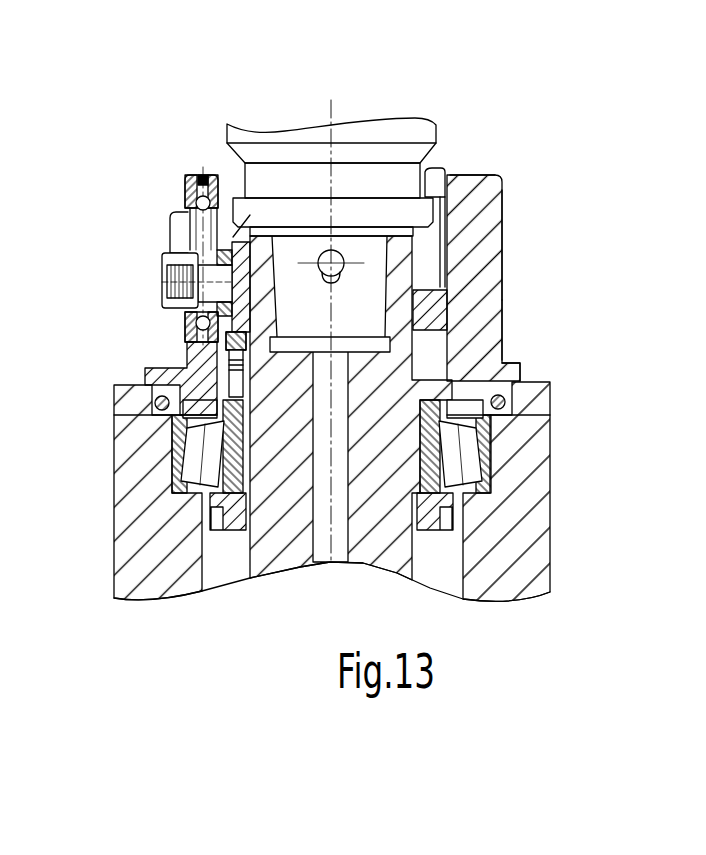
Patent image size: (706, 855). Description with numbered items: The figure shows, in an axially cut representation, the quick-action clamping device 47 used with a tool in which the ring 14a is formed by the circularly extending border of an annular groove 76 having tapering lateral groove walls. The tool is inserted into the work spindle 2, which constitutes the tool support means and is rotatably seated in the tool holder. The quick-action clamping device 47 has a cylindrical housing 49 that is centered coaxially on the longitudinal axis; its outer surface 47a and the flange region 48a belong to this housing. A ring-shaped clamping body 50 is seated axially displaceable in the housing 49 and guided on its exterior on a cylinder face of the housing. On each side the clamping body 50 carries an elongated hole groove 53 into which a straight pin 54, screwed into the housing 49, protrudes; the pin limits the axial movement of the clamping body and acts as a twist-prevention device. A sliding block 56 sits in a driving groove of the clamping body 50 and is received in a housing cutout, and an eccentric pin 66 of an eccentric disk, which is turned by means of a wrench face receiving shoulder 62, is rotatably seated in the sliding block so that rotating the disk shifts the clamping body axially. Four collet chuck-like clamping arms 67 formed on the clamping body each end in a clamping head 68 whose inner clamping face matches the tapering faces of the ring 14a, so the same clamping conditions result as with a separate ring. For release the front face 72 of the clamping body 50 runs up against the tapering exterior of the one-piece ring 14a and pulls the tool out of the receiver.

The spindle 2 is at (265, 540).
The ring 14a is at (476, 175).
The quick-action clamping device 47 is at (0, 117).
The clamping ring outer surface 47a is at (506, 277).
The cover flange 48a is at (192, 353).
The housing 49 is at (467, 340).
The clamping body 50 is at (425, 317).
The elongated hole groove 53 is at (335, 277).
The straight pin 54 is at (335, 257).
The sliding block 56 is at (233, 312).
The wrench face receiving shoulder 62 is at (163, 255).
The eccentric pin 66 is at (178, 318).
The clamping arms 67 is at (447, 237).
The clamping head 68 is at (450, 173).
The front face 72 is at (170, 222).
The groove 76 is at (425, 167).